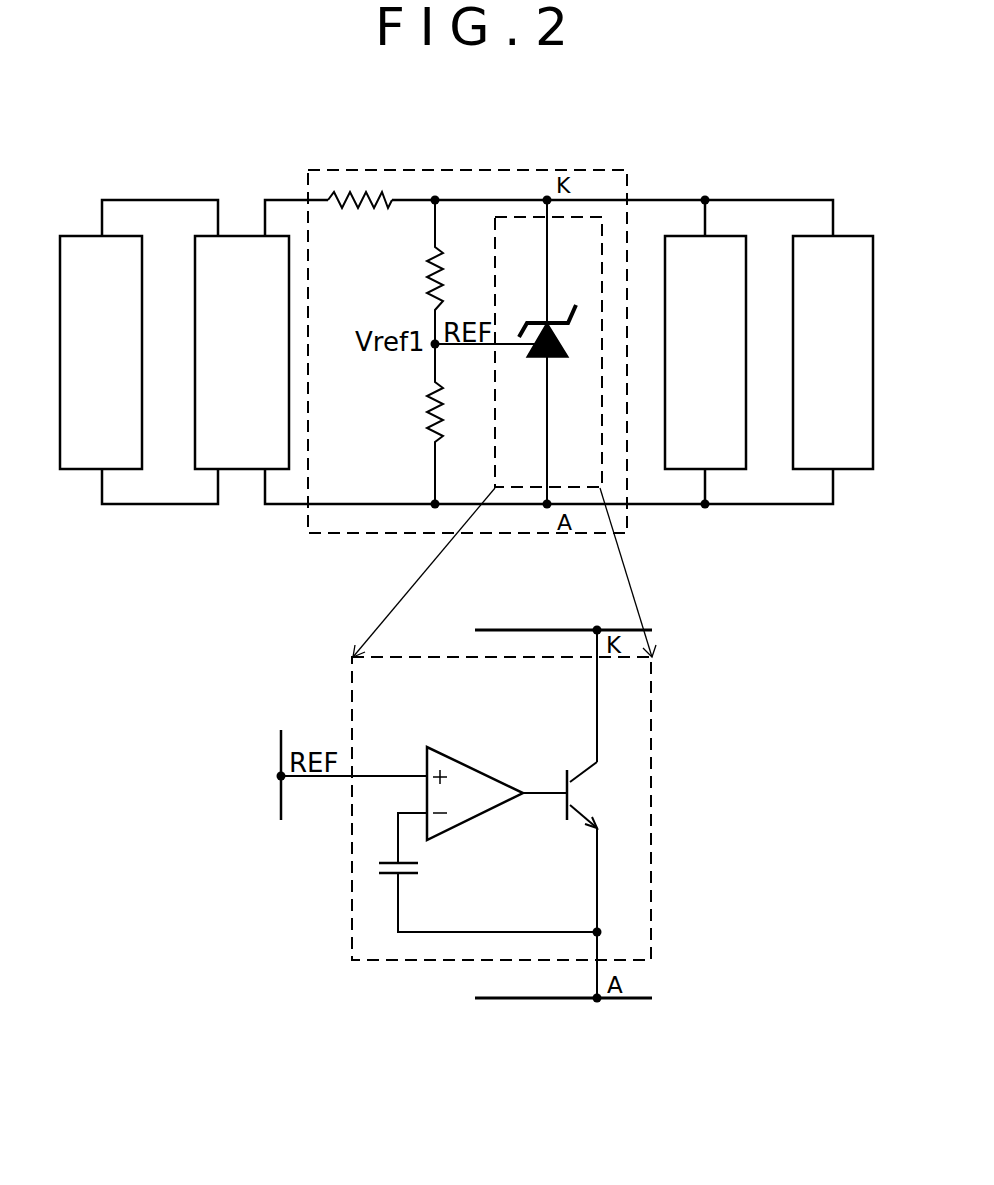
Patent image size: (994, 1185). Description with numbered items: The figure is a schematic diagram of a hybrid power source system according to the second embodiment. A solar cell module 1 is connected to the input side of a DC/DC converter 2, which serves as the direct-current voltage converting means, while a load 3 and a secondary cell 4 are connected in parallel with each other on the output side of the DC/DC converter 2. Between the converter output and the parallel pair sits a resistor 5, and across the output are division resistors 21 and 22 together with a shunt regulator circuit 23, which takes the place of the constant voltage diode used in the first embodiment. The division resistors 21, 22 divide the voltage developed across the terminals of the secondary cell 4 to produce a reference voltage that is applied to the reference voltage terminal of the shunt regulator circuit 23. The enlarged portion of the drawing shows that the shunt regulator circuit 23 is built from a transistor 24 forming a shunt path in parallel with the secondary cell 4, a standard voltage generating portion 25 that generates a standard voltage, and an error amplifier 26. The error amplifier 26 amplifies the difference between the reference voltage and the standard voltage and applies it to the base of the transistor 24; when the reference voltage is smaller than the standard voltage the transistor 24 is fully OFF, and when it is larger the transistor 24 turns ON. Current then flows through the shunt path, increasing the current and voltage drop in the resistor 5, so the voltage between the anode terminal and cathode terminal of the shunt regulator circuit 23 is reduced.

The solar cell module 1 is at (80, 235).
The DC/DC converter 2 is at (243, 235).
The load 3 is at (855, 235).
The secondary cell 4 is at (727, 235).
The resistor 5 is at (346, 190).
The division resistor 21 is at (425, 280).
The division resistor 22 is at (425, 426).
The shunt regulator circuit 23 is at (583, 215).
The transistor 24 is at (586, 793).
The standard voltage generating portion 25 is at (381, 871).
The error amplifier 26 is at (466, 829).